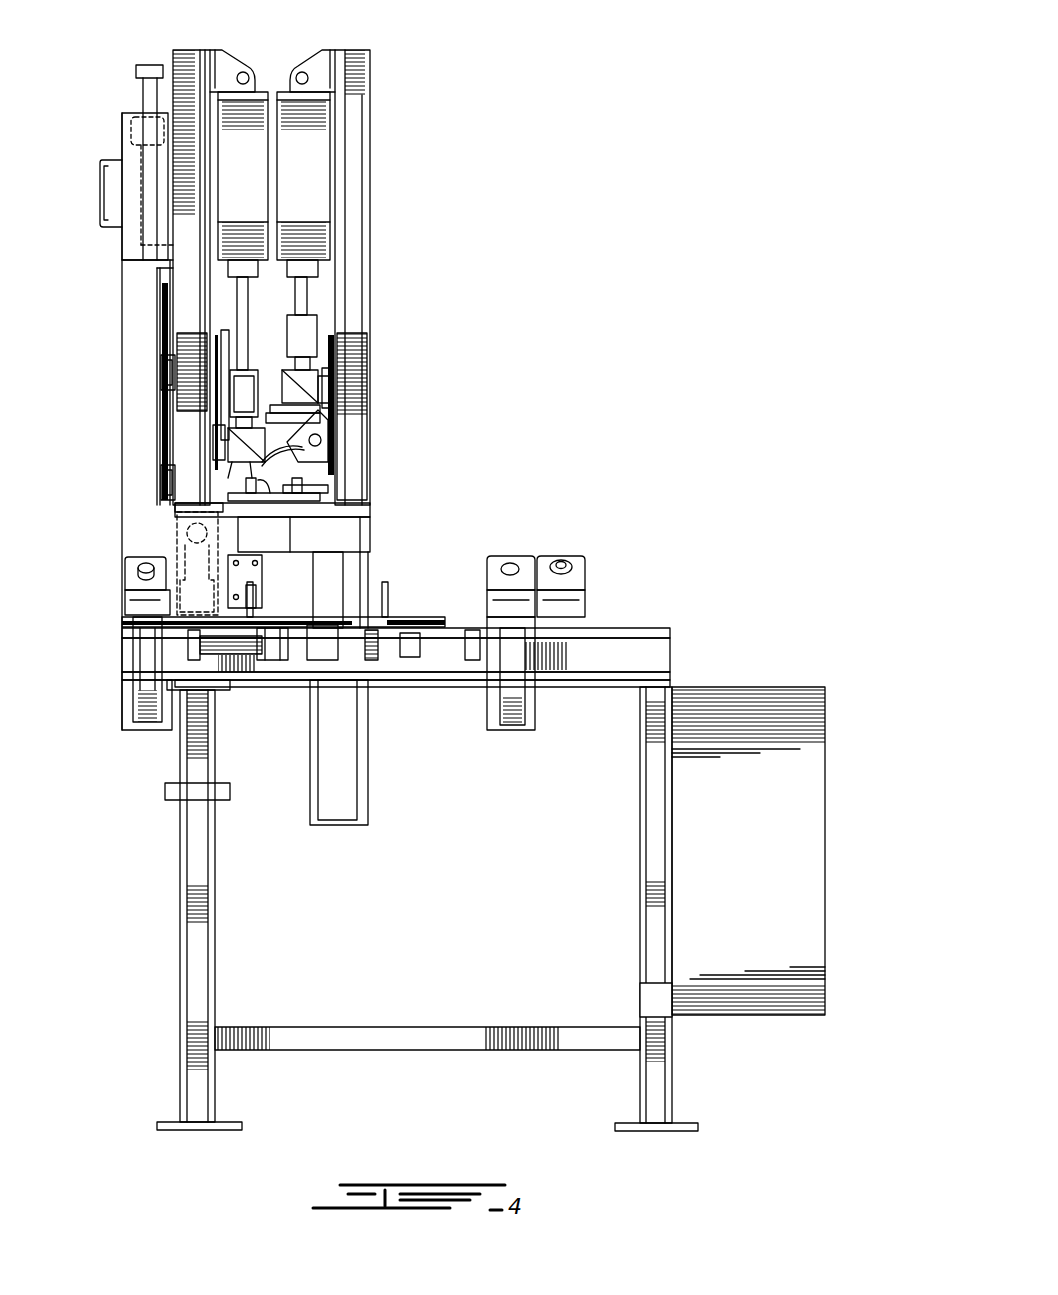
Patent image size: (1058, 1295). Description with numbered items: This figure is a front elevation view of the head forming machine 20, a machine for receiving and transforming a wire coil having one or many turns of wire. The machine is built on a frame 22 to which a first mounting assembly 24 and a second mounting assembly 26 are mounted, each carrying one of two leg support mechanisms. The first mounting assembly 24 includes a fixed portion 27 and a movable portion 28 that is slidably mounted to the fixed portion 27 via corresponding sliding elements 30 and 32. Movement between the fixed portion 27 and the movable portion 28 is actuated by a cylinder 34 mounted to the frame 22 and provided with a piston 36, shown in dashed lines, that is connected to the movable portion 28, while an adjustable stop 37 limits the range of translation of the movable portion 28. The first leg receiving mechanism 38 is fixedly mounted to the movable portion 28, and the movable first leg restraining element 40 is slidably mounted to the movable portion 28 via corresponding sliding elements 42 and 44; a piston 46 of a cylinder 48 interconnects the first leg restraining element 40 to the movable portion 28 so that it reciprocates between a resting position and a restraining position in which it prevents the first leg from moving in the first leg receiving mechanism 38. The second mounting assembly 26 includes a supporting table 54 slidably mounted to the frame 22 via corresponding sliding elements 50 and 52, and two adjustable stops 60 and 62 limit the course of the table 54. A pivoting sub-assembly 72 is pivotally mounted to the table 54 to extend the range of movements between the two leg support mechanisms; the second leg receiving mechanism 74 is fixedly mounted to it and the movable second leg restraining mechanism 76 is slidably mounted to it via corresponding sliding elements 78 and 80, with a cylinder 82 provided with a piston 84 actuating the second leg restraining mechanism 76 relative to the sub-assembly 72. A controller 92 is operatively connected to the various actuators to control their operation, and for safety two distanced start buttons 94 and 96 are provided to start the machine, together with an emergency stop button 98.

The head forming machine 20 is at (612, 212).
The frame 22 is at (634, 888).
The first mounting assembly 24 is at (120, 290).
The second mounting assembly 26 is at (376, 193).
The fixed portion 27 is at (128, 115).
The movable portion 28 is at (188, 402).
The sliding element 30 is at (164, 370).
The sliding element 32 is at (165, 432).
The cylinder 34 is at (172, 738).
The piston 36 is at (197, 567).
The adjustable stop 37 is at (150, 63).
The first leg receiving mechanism 38 is at (232, 488).
The first leg restraining element 40 is at (233, 424).
The sliding element 42 is at (217, 447).
The sliding element 44 is at (229, 370).
The piston 46 is at (312, 320).
The cylinder 48 is at (245, 130).
The sliding element 50 is at (428, 619).
The sliding element 52 is at (387, 620).
The supporting table 54 is at (355, 607).
The adjustable stop 60 is at (277, 645).
The adjustable stop 62 is at (398, 648).
The pivoting sub-assembly 72 is at (376, 338).
The second leg receiving mechanism 74 is at (303, 488).
The second leg restraining mechanism 76 is at (276, 418).
The sliding element 78 is at (320, 378).
The sliding element 80 is at (334, 470).
The cylinder 82 is at (300, 163).
The piston 84 is at (307, 290).
The controller 92 is at (745, 1015).
The start button 94 is at (148, 567).
The start button 96 is at (510, 555).
The emergency stop button 98 is at (562, 555).